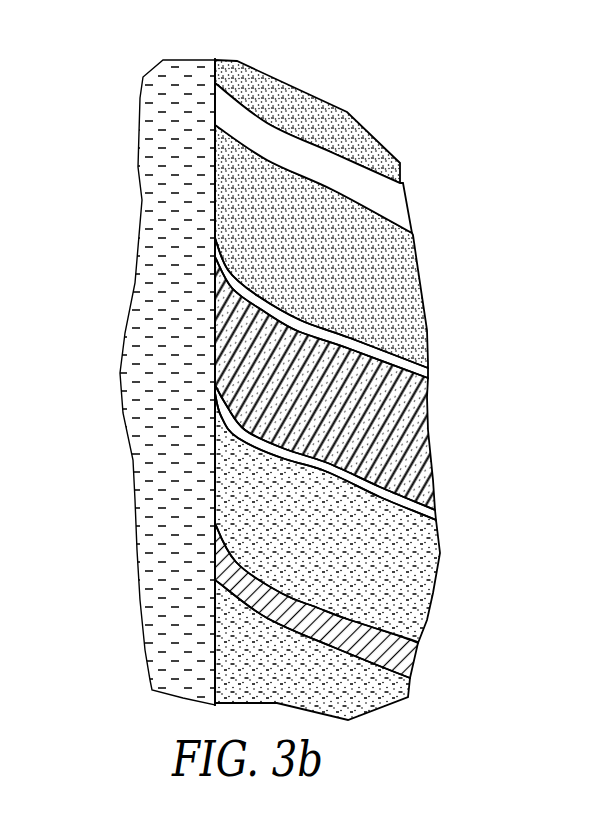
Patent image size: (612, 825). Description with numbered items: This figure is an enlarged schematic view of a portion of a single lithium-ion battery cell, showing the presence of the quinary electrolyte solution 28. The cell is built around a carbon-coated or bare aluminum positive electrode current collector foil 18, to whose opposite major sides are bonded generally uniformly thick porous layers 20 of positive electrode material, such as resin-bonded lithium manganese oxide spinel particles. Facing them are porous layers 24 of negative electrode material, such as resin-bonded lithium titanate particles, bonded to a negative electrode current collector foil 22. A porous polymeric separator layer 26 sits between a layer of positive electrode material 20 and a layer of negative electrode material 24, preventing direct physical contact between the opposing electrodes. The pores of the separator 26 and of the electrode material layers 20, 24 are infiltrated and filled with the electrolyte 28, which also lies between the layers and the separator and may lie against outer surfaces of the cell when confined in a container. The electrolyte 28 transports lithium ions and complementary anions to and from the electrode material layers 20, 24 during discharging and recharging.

The positive electrode current collector foil 18 is at (233, 122).
The porous layers of positive battery electrode material 20 is at (222, 83).
The negative electrode current collector foil 22 is at (237, 575).
The porous layers of negative electrode material 24 is at (235, 512).
The porous polymeric separator layer 26 is at (221, 353).
The quinary electrolyte solution 28 is at (257, 302).